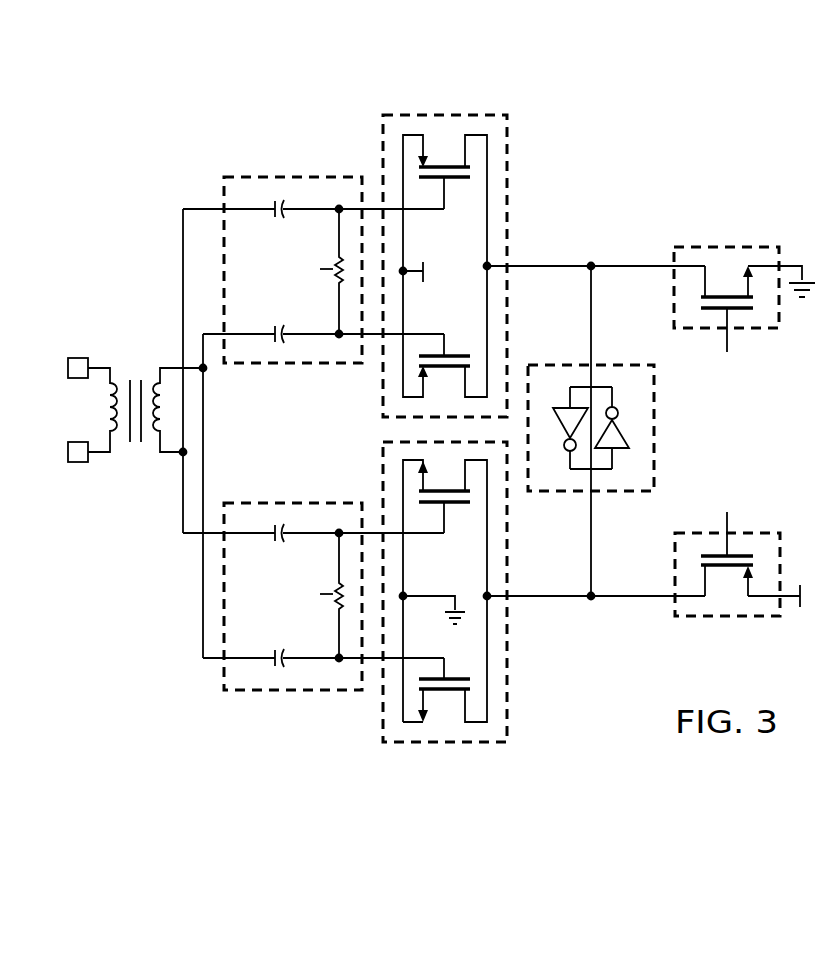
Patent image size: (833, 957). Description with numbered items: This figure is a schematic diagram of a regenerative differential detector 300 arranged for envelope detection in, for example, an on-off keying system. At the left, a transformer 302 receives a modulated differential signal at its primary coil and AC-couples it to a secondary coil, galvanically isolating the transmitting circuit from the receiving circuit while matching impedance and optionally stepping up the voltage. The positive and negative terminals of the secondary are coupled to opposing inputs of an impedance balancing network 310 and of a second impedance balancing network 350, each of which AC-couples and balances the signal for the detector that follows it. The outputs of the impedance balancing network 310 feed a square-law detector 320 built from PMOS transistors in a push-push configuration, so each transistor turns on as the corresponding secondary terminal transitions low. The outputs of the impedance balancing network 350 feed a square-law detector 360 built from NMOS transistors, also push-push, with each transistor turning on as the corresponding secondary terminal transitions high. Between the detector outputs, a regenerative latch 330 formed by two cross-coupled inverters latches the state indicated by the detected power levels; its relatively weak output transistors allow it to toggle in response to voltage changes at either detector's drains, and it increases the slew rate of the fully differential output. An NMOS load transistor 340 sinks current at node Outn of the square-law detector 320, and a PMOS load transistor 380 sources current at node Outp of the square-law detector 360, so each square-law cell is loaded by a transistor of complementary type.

The regenerative differential detector 300 is at (242, 63).
The transformer 302 is at (103, 295).
The impedance balancing network 310 is at (250, 173).
The square-law detector 320 is at (427, 107).
The regenerative latch 330 is at (609, 359).
The load transistor 340 is at (758, 241).
The impedance balancing network 350 is at (248, 696).
The square-law detector 360 is at (425, 750).
The load transistor 380 is at (759, 625).